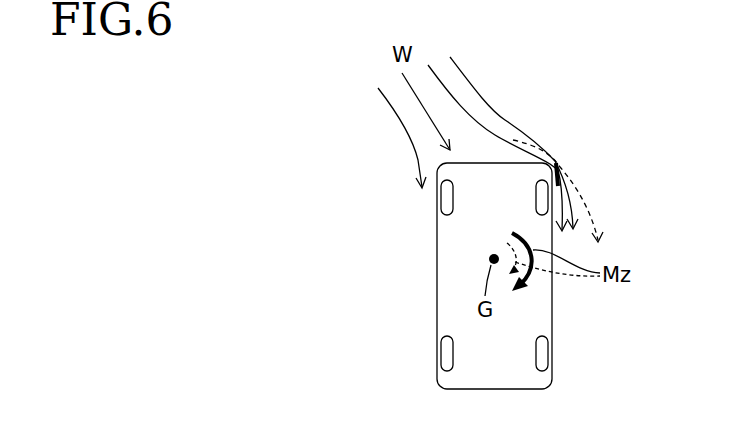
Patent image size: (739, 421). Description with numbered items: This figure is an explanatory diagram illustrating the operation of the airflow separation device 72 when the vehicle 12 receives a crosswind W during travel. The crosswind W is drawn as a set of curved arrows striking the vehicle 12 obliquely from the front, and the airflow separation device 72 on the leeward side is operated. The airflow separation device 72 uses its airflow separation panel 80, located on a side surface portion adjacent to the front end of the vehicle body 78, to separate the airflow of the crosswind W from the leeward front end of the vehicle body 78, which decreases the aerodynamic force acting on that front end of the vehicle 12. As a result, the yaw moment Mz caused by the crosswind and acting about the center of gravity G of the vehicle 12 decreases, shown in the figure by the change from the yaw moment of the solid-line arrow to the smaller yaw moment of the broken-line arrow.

The vehicle 12 is at (430, 265).
The vehicle body 78 is at (437, 327).
The airflow separation panel 80 is at (560, 162).
The airflow separation device 72 is at (568, 168).